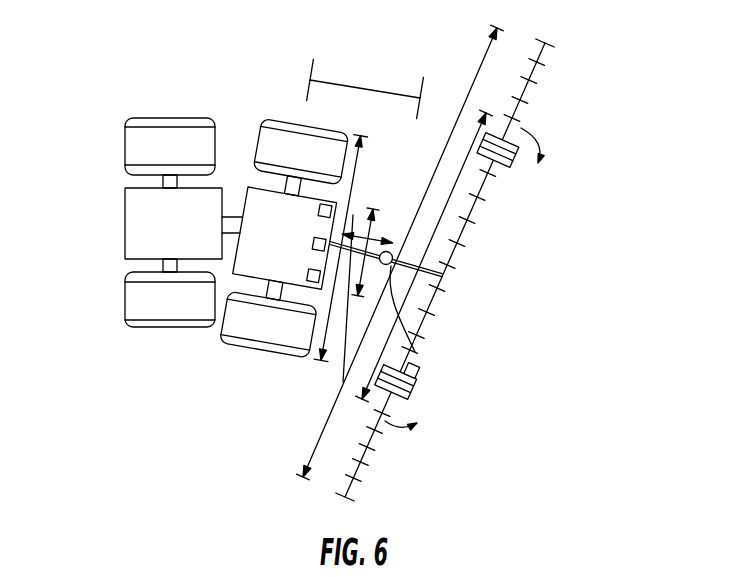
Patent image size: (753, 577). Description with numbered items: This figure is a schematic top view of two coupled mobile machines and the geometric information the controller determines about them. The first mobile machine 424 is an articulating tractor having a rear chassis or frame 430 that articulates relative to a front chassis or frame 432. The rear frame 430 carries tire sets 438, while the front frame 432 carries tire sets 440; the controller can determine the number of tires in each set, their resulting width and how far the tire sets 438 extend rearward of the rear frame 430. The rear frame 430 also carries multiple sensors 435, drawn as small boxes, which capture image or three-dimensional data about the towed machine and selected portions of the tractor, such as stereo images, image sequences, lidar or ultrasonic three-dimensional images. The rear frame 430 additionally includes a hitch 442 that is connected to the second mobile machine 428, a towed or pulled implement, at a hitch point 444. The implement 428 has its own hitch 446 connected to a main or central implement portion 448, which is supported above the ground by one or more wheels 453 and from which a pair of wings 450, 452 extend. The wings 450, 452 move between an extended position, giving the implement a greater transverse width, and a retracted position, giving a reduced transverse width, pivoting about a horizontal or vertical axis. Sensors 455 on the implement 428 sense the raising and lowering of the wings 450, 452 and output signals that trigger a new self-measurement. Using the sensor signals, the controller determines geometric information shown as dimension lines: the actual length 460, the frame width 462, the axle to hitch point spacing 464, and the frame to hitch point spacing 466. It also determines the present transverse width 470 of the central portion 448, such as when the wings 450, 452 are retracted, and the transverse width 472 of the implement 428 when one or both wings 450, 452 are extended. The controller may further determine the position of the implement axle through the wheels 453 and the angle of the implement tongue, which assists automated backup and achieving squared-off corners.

The mobile machine 424 is at (166, 98).
The mobile machine 428 is at (550, 79).
The rear chassis or frame 430 is at (253, 187).
The front chassis or frame 432 is at (125, 222).
The sensors 435 is at (299, 240).
The tire sets 438 is at (284, 238).
The tire sets 440 is at (138, 118).
The hitch 442 is at (340, 248).
The hitch point 444 is at (343, 382).
The hitch 446 is at (415, 352).
The main or central implement portion 448 is at (445, 275).
The wing 450 is at (368, 465).
The wing 452 is at (522, 108).
The wheels 453 is at (508, 168).
The sensors 455 is at (418, 374).
The actual length 460 is at (365, 158).
The frame width 462 is at (367, 239).
The axle to hitch point spacing 464 is at (370, 85).
The frame to hitch point spacing 466 is at (365, 252).
The transverse width 470 is at (452, 200).
The transverse width 472 is at (461, 112).